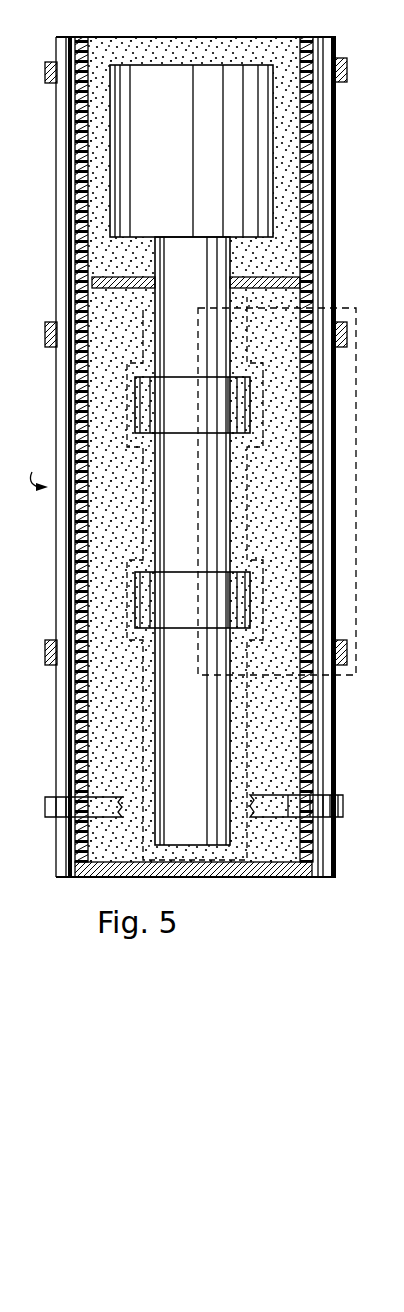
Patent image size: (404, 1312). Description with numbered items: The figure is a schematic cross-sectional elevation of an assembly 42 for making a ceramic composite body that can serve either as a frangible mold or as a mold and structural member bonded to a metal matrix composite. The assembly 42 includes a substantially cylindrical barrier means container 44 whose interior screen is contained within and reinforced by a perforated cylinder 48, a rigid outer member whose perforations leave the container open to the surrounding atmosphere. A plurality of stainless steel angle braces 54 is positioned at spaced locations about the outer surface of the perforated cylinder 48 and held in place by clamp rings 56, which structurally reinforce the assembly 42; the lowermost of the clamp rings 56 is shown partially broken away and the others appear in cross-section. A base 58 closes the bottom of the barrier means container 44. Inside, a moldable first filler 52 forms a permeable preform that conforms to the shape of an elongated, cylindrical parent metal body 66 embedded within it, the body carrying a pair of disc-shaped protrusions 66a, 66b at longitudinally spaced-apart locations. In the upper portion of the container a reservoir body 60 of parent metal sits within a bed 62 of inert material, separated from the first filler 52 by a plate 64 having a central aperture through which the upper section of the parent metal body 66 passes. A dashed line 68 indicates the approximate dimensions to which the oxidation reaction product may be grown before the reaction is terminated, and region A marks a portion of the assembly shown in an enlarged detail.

The assembly 42 is at (35, 469).
The barrier means container 44 is at (74, 593).
The perforated cylinder 48 is at (313, 522).
The first filler 52 is at (115, 330).
The angle braces 54 is at (324, 248).
The clamp rings 56 is at (50, 84).
The base 58 is at (287, 877).
The reservoir body 60 is at (166, 134).
The bed of inert material 62 is at (175, 50).
The plate 64 is at (305, 270).
The parent metal body 66 is at (190, 511).
The disc-shaped protrusion 66a is at (188, 420).
The disc-shaped protrusion 66b is at (188, 615).
The dashed line 68 is at (140, 529).
The region A is at (355, 427).